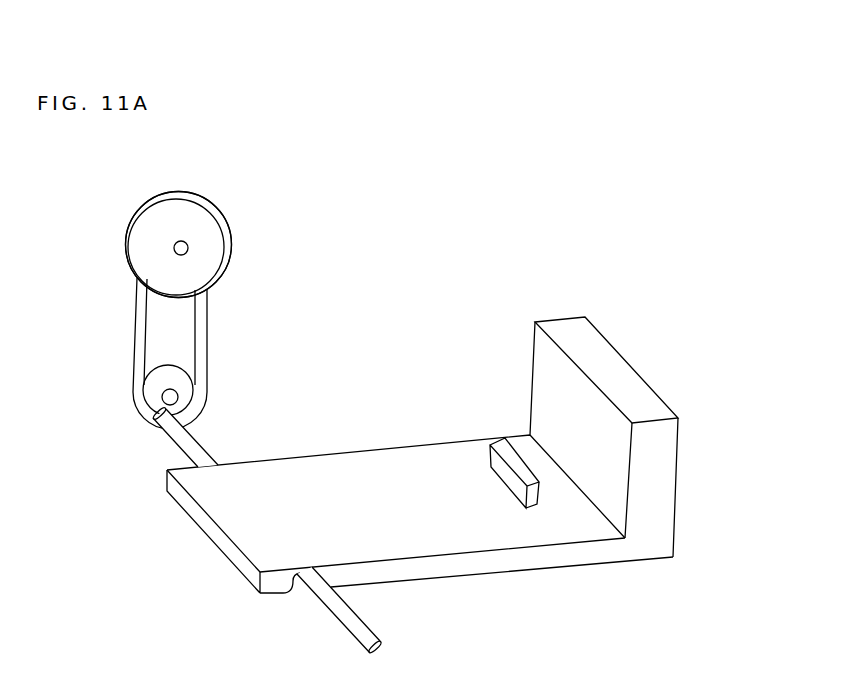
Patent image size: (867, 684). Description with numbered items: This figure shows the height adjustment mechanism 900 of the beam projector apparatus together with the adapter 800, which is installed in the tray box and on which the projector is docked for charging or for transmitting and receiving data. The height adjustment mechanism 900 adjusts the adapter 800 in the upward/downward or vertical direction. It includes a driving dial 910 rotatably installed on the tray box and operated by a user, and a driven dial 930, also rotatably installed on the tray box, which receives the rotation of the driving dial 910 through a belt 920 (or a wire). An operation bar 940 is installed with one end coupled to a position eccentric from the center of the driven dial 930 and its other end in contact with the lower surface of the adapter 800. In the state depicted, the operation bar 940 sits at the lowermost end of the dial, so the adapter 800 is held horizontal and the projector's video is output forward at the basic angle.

The adapter 800 is at (390, 470).
The height adjustment mechanism 900 is at (230, 216).
The driving dial 910 is at (173, 220).
The belt 920 is at (135, 325).
The driven dial 930 is at (156, 397).
The operation bar 940 is at (350, 617).